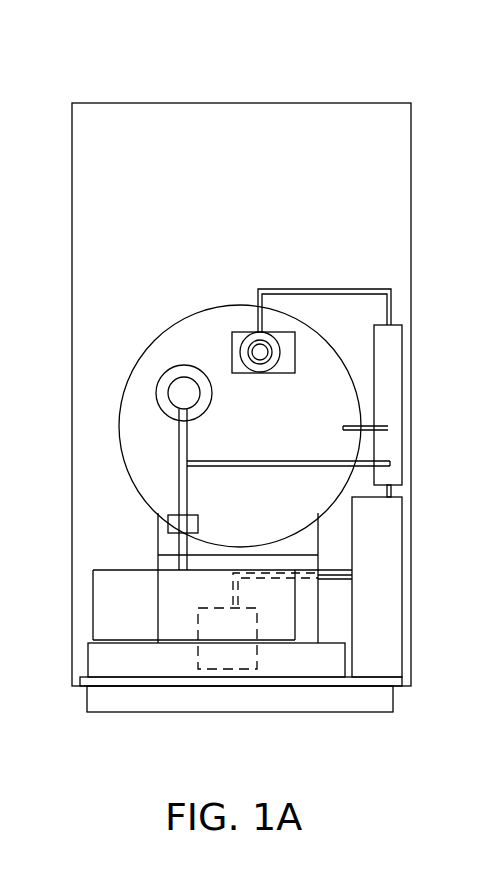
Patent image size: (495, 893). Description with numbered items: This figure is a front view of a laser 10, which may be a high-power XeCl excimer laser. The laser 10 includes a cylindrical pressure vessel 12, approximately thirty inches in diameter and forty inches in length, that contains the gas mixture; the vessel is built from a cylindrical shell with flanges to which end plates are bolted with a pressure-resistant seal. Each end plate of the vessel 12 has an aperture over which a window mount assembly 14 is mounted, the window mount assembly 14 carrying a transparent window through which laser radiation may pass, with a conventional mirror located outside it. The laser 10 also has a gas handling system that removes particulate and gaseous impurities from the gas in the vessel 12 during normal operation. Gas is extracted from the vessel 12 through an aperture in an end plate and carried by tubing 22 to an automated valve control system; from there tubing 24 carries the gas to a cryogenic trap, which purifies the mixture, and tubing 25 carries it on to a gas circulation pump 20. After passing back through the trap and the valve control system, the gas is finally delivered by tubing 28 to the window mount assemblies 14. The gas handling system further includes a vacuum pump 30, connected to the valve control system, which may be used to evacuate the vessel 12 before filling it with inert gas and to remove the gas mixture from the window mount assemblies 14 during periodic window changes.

The laser 10 is at (298, 78).
The cylindrical pressure vessel 12 is at (345, 530).
The window mount assembly 14 is at (293, 352).
The gas circulation pump 20 is at (257, 669).
The tubing 22 is at (388, 428).
The tubing 24 is at (391, 491).
The tubing 25 is at (340, 580).
The tubing 28 is at (372, 289).
The vacuum pump 30 is at (295, 612).